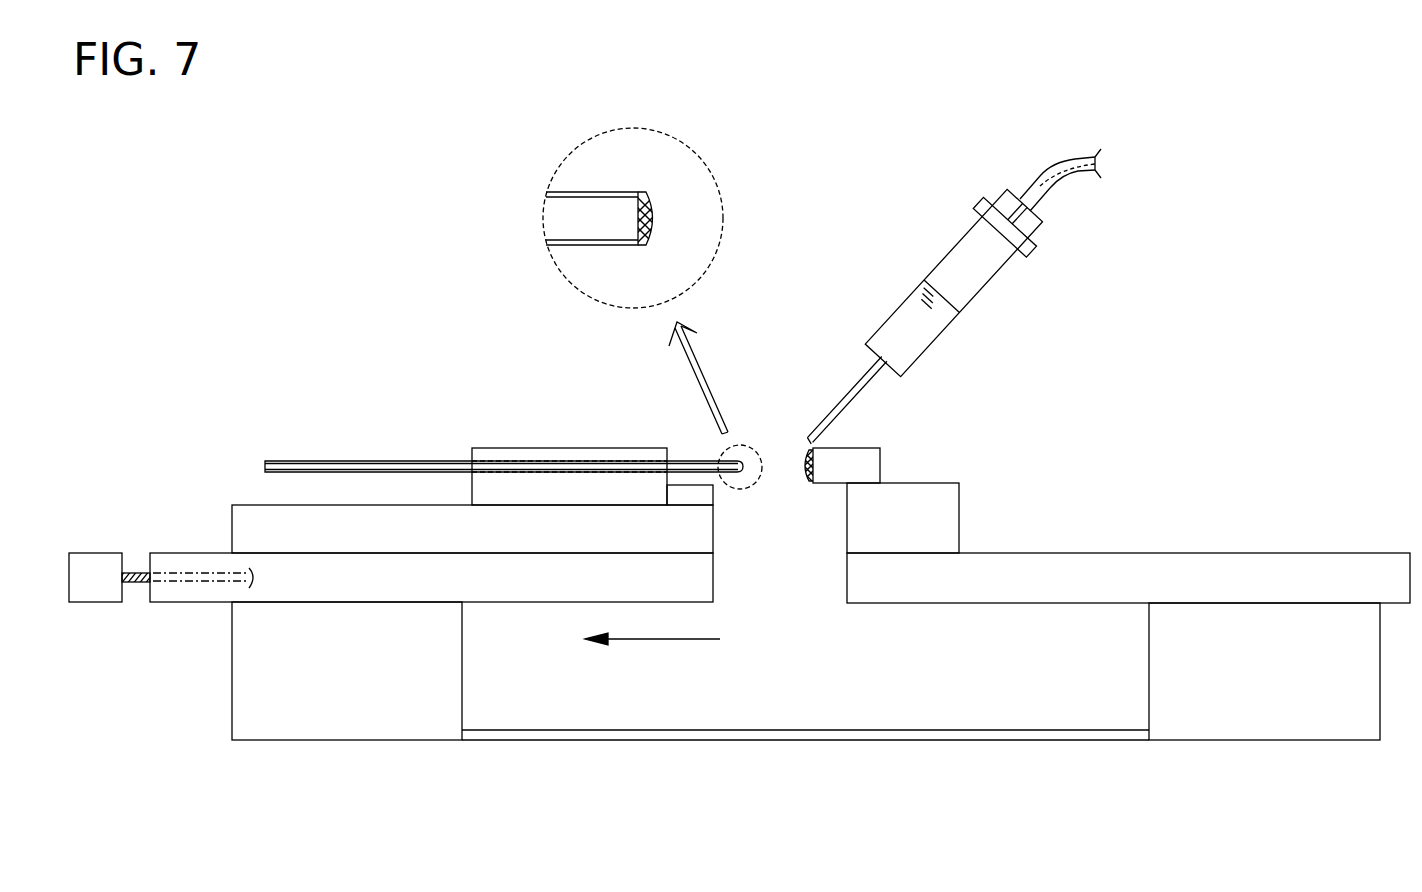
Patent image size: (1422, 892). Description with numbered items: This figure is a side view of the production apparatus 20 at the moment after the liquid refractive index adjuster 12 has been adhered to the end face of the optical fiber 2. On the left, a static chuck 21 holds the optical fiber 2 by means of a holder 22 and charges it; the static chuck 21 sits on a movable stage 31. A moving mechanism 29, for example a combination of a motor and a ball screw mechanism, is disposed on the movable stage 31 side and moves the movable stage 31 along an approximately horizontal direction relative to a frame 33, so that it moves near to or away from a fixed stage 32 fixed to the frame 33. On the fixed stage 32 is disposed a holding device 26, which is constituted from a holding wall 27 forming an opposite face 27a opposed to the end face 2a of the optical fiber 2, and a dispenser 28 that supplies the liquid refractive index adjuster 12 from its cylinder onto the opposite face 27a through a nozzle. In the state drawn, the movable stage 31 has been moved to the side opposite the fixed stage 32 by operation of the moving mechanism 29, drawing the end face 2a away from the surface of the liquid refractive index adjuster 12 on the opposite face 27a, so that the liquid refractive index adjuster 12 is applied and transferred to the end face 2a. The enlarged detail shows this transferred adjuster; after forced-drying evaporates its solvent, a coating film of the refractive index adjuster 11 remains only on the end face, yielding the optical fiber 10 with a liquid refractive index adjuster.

The optical fiber 2 is at (353, 460).
The end face 2a is at (649, 200).
The optical fiber with a liquid refractive index adjuster 10 is at (612, 348).
The refractive index adjuster 11 is at (645, 246).
The liquid refractive index adjuster 12 is at (780, 376).
The production apparatus 20 is at (428, 298).
The static chuck 21 is at (226, 508).
The holder 22 is at (550, 447).
The holding device 26 is at (937, 316).
The holding wall 27 is at (880, 440).
The opposite face 27a is at (805, 460).
The dispenser 28 is at (988, 300).
The moving mechanism 29 is at (94, 545).
The movable stage 31 is at (500, 590).
The fixed stage 32 is at (1033, 588).
The frame 33 is at (333, 722).